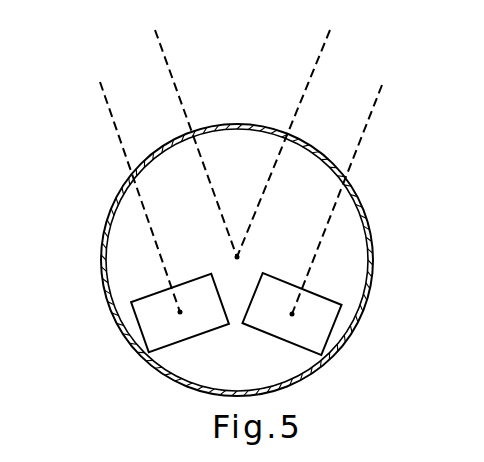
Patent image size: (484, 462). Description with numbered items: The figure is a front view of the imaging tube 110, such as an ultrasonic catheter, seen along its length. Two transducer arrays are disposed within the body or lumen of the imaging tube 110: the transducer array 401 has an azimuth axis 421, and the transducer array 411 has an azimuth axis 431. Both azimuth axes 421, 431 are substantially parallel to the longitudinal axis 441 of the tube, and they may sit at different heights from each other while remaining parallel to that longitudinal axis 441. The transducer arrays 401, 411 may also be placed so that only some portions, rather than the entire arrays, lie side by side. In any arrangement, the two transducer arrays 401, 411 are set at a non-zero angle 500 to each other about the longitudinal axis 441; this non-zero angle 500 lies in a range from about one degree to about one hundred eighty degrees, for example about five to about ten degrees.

The imaging tube 110 is at (367, 213).
The transducer array 401 is at (335, 326).
The transducer array 411 is at (157, 290).
The azimuth axis 421 is at (292, 314).
The azimuth axis 431 is at (180, 312).
The longitudinal axis 441 is at (237, 256).
The non-zero angle 500 is at (315, 67).